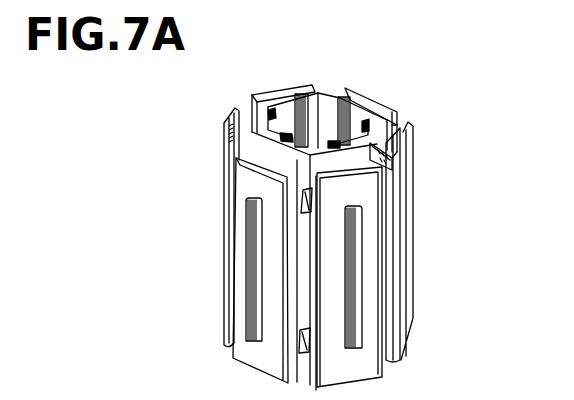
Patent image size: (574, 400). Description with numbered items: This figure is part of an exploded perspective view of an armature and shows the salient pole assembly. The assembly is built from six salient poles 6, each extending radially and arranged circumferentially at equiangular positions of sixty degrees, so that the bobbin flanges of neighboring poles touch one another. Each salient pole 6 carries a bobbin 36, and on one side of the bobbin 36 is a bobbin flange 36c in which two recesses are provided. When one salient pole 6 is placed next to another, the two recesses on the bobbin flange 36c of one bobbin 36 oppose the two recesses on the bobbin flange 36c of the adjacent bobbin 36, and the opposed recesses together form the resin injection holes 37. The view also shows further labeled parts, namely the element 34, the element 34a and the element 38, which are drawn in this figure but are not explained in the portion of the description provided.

The salient pole 6 is at (231, 109).
The side plate 34 is at (245, 228).
The slot 34a is at (476, 272).
The bobbin 36 is at (370, 374).
The bobbin flange 36c is at (382, 167).
The resin injection hole 37 is at (302, 197).
The top rim 38 is at (394, 126).